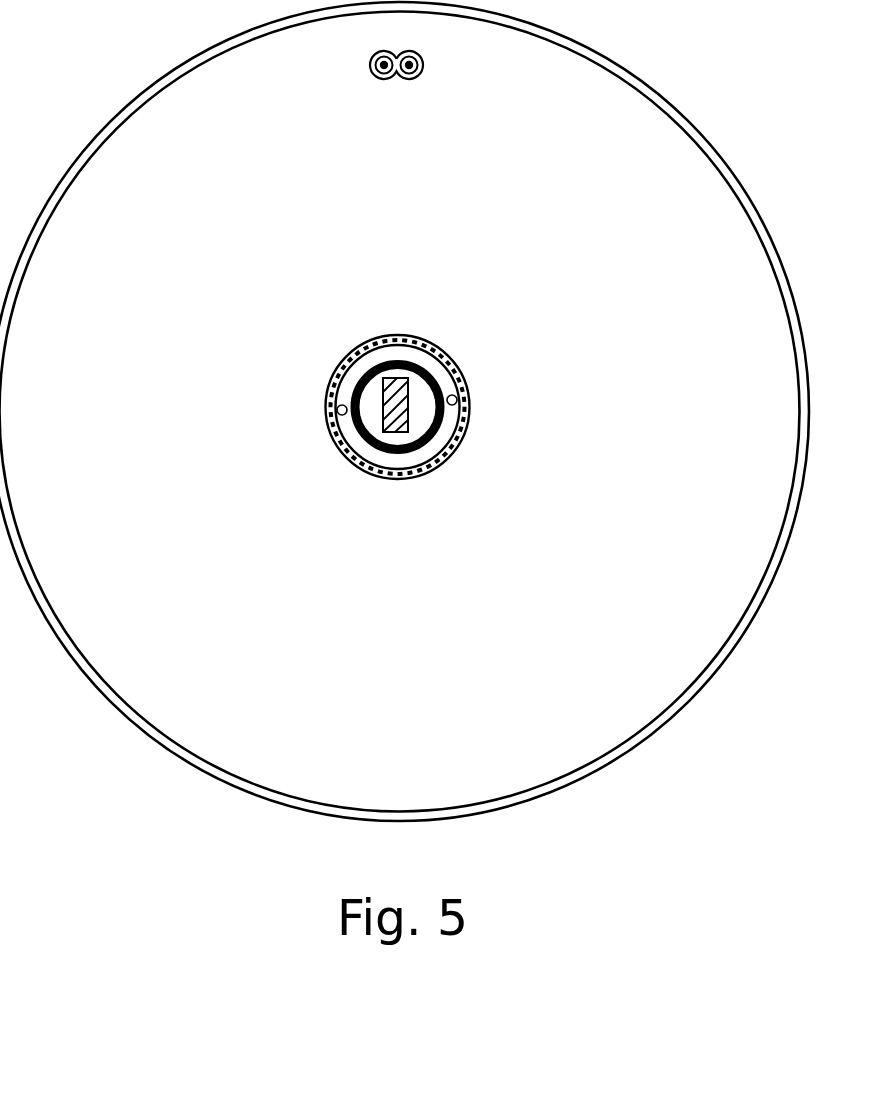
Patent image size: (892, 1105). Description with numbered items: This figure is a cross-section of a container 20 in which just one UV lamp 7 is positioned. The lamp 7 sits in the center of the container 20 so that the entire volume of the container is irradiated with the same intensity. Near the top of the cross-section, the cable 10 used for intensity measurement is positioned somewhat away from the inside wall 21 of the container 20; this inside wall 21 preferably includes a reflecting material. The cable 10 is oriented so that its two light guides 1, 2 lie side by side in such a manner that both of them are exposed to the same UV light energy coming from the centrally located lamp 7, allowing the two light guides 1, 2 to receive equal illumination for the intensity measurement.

The light guide 1 is at (409, 73).
The light guide 2 is at (382, 71).
The cable 10 is at (384, 107).
The UV lamp 7 is at (420, 386).
The container 20 is at (404, 442).
The inside wall 21 is at (151, 786).